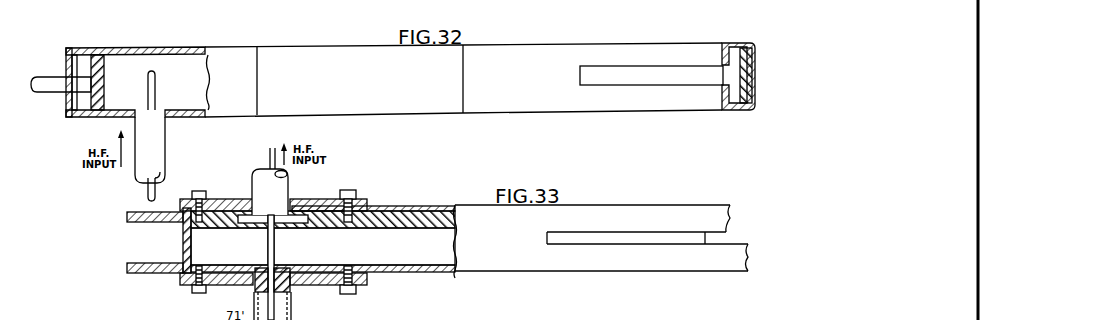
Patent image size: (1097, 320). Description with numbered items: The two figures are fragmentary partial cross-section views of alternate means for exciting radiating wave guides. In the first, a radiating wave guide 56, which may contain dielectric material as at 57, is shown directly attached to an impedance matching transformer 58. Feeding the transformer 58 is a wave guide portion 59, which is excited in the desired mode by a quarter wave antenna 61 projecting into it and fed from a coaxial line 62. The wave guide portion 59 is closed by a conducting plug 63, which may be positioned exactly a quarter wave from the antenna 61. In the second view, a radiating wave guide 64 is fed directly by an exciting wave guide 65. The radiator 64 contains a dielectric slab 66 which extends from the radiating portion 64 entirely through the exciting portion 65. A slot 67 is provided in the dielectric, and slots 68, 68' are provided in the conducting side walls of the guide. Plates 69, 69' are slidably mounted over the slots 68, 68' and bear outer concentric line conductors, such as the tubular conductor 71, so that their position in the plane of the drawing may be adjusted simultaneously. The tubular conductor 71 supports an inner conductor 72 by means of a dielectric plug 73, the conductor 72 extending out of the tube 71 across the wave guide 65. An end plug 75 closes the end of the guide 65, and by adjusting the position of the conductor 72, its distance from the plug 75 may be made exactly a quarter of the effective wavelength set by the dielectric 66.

In FIG. 32, the radiating wave guide 56 is at (508, 112).
In FIG. 32, the dielectric material 57 is at (755, 67).
In FIG. 32, the impedance matching transformer 58 is at (398, 113).
In FIG. 32, the wave guide portion 59 is at (181, 117).
In FIG. 32, the quarter wave antenna 61 is at (155, 78).
In FIG. 32, the coaxial line 62 is at (162, 137).
In FIG. 32, the conducting plug 63 is at (104, 70).
In FIG. 33, the radiating wave guide 64 is at (658, 271).
In FIG. 33, the exciting wave guide 65 is at (410, 265).
In FIG. 33, the dielectric slab 66 is at (381, 228).
In FIG. 33, the slot 67 is at (283, 224).
In FIG. 33, the slot 68 is at (328, 203).
In FIG. 33, the slot 68' is at (328, 286).
In FIG. 33, the plate 69 is at (216, 203).
In FIG. 33, the plate 69' is at (216, 287).
In FIG. 33, the outer concentric line conductor 71 is at (283, 191).
In FIG. 33, the inner conductor 72 is at (268, 241).
In FIG. 33, the dielectric plug 73 is at (277, 268).
In FIG. 33, the end plug 75 is at (183, 245).